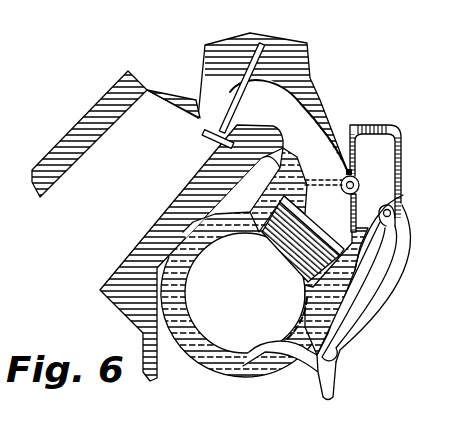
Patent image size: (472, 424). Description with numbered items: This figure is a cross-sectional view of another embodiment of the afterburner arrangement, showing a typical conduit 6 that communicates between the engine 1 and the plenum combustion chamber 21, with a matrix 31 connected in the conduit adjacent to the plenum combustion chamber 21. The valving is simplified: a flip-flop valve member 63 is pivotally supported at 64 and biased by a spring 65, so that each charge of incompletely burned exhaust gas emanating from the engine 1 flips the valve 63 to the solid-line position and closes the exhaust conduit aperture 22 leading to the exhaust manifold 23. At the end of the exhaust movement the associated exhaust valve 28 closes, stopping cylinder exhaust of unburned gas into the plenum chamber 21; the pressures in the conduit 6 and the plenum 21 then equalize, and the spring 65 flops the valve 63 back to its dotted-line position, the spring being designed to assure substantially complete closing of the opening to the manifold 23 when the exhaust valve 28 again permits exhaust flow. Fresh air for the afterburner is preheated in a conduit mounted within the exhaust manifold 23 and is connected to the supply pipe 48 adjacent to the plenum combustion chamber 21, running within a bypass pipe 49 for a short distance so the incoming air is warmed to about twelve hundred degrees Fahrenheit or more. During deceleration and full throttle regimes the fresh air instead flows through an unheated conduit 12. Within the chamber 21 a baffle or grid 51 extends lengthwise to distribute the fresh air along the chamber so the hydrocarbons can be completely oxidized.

The engine 1 is at (48, 104).
The conduit 6 is at (312, 118).
The unheated conduit 12 is at (334, 388).
The plenum combustion chamber 21 is at (208, 352).
The exhaust conduit aperture 22 is at (400, 196).
The exhaust manifold 23 is at (396, 160).
The exhaust valve 28 is at (201, 129).
The matrix 31 is at (278, 250).
The supply pipe 48 is at (370, 303).
The bypass pipe 49 is at (403, 262).
The baffle or grid 51 is at (262, 336).
The flip-flop valve member 63 is at (351, 229).
The pivot 64 is at (345, 172).
The spring 65 is at (354, 179).